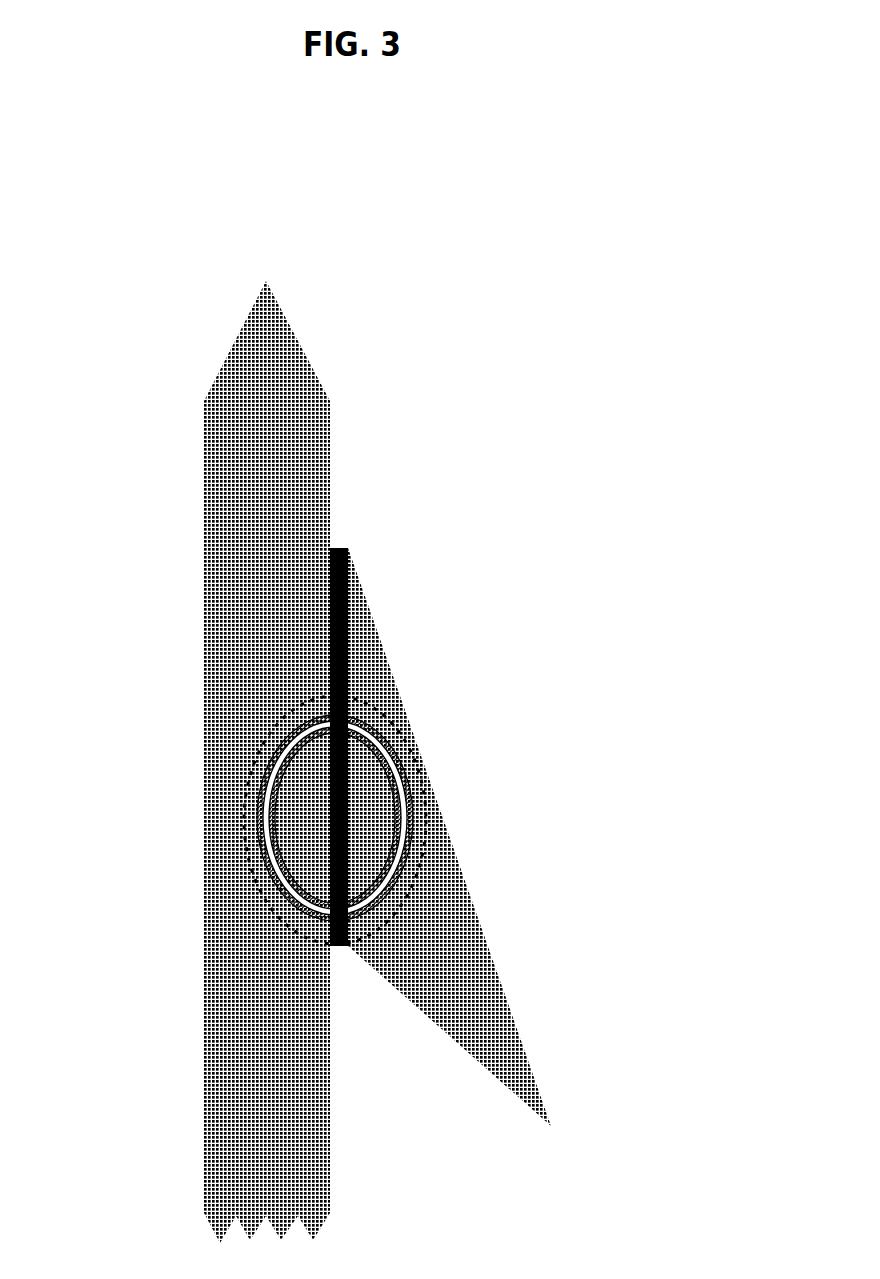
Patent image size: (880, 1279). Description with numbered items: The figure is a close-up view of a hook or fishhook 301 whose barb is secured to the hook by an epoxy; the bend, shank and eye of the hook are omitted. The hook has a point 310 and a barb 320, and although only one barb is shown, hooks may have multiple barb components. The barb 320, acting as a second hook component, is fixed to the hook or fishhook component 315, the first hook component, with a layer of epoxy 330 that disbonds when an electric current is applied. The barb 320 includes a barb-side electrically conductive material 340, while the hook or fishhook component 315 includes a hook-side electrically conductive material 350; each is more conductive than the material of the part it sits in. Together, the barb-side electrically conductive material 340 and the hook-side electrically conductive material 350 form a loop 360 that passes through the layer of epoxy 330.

The hook or fishhook 301 is at (160, 272).
The point 310 is at (270, 342).
The hook or fishhook component 315 is at (266, 762).
The barb 320 is at (455, 837).
The layer of epoxy 330 is at (332, 532).
The barb-side electrically conductive material 340 is at (398, 764).
The hook-side electrically conductive material 350 is at (266, 745).
The loop 360 is at (425, 825).